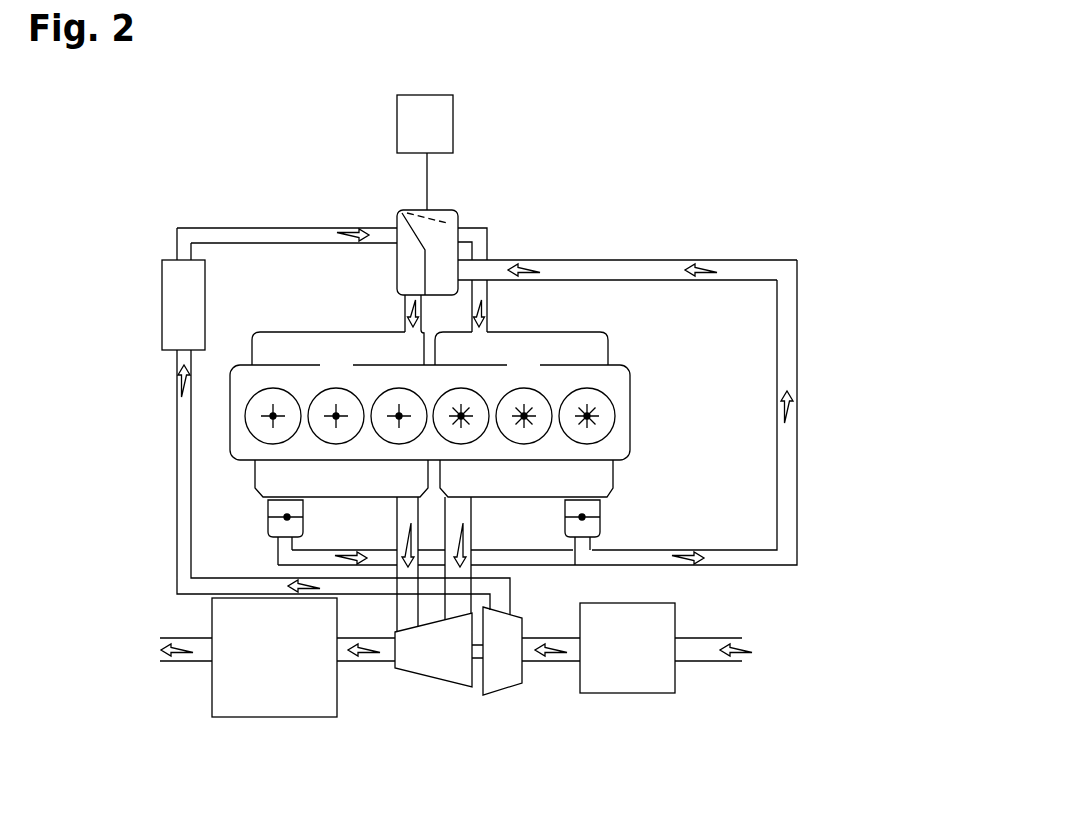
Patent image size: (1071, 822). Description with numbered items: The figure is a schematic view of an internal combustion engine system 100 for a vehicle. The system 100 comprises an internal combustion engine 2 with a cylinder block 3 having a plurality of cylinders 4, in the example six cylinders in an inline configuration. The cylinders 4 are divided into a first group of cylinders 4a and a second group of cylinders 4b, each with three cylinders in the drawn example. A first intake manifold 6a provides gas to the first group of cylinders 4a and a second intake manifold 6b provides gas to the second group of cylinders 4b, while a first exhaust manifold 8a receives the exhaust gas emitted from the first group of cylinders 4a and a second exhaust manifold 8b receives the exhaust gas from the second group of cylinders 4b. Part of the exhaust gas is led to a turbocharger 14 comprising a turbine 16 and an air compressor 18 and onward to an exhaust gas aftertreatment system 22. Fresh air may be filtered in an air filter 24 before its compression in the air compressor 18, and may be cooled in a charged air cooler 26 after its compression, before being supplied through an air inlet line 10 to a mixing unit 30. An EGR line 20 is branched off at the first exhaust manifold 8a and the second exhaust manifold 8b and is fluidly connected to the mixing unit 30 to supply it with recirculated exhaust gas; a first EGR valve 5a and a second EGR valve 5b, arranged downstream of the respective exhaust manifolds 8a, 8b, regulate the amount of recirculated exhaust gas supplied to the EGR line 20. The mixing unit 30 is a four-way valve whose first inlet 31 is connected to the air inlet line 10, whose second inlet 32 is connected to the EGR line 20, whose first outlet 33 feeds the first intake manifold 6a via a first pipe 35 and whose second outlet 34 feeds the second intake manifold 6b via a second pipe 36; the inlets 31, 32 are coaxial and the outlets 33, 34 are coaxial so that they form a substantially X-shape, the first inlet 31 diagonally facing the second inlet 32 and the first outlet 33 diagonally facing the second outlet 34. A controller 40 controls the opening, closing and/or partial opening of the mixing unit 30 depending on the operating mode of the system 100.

The internal combustion engine system 100 is at (728, 186).
The internal combustion engine 2 is at (642, 337).
The cylinder block 3 is at (630, 392).
The cylinders 4 is at (617, 428).
The first group of cylinders 4a is at (417, 384).
The second group of cylinders 4b is at (607, 384).
The first intake manifold 6a is at (277, 322).
The second intake manifold 6b is at (598, 337).
The first exhaust manifold 8a is at (253, 480).
The second exhaust manifold 8b is at (615, 477).
The first EGR valve 5a is at (268, 523).
The second EGR valve 5b is at (600, 522).
The air inlet line 10 is at (177, 418).
The turbocharger 14 is at (522, 716).
The turbine 16 is at (407, 653).
The air compressor 18 is at (527, 670).
The EGR line 20 is at (800, 349).
The exhaust gas aftertreatment system 22 is at (212, 703).
The air filter 24 is at (673, 695).
The charged air cooler 26 is at (162, 320).
The mixing unit 30 is at (463, 203).
The first inlet 31 is at (388, 226).
The second inlet 32 is at (470, 269).
The first outlet 33 is at (392, 301).
The second outlet 34 is at (470, 228).
The first pipe 35 is at (392, 319).
The second pipe 36 is at (500, 313).
The controller 40 is at (438, 94).